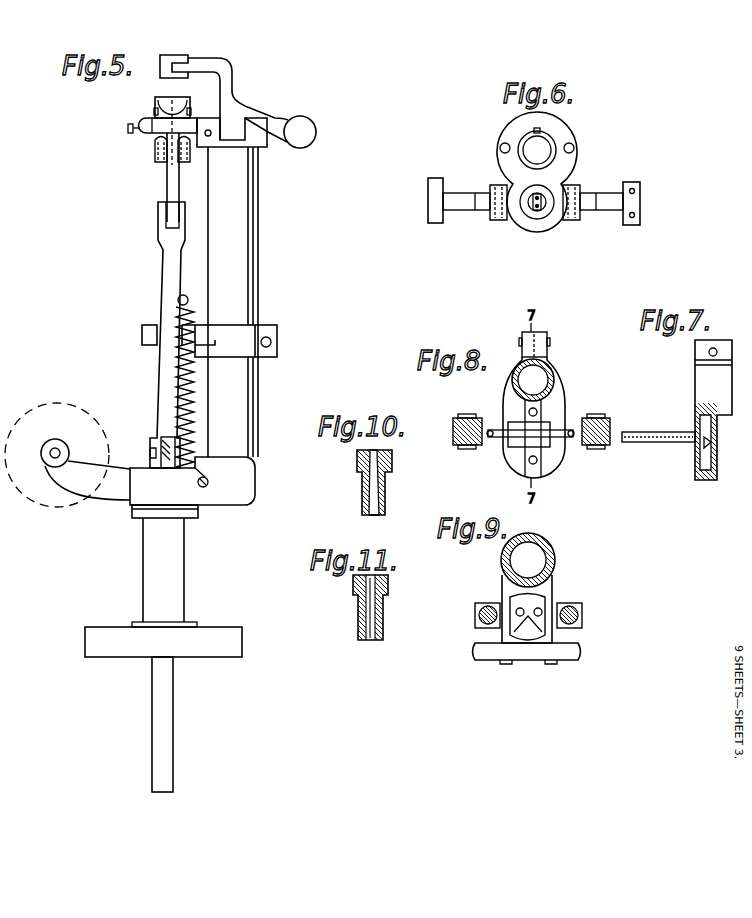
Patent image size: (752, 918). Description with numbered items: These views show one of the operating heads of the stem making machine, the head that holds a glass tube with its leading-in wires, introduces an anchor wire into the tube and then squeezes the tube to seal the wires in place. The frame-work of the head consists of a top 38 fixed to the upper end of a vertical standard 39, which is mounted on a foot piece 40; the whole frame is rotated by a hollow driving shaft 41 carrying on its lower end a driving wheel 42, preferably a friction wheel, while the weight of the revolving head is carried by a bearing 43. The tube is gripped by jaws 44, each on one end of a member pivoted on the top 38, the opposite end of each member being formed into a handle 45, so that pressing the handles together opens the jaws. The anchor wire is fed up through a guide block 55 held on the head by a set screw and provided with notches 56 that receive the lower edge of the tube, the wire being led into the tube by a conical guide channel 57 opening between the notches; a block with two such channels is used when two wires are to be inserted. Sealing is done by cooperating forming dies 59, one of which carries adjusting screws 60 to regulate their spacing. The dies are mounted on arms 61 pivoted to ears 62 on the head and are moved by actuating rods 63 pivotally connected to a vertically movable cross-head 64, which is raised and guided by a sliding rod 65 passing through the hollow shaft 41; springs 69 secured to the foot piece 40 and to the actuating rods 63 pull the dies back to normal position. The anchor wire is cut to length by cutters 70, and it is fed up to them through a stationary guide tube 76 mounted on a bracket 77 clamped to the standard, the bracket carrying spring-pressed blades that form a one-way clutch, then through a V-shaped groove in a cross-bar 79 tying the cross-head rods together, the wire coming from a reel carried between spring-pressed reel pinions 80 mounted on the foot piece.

In FIG. 5, the top 38 is at (265, 148).
In FIG. 5, the vertical standard 39 is at (233, 302).
In FIG. 8, the vertical standard 39 is at (553, 373).
In FIG. 9, the vertical standard 39 is at (553, 552).
In FIG. 5, the foot piece 40 is at (255, 492).
In FIG. 5, the hollow driving shaft 41 is at (185, 576).
In FIG. 5, the driving wheel 42 is at (243, 641).
In FIG. 5, the bearing 43 is at (200, 513).
In FIG. 5, the jaws 44 is at (176, 62).
In FIG. 5, the handle 45 is at (252, 103).
In FIG. 5, the guide block 55 is at (190, 110).
In FIG. 6, the guide block 55 is at (548, 198).
In FIG. 10, the guide block 55 is at (386, 494).
In FIG. 11, the guide block 55 is at (384, 614).
In FIG. 10, the notches 56 is at (385, 456).
In FIG. 10, the conical guide channel 57 is at (374, 514).
In FIG. 5, the forming dies 59 is at (152, 124).
In FIG. 6, the forming dies 59 is at (428, 201).
In FIG. 5, the adjusting screws 60 is at (156, 118).
In FIG. 6, the adjusting screws 60 is at (635, 215).
In FIG. 5, the arms 61 is at (167, 181).
In FIG. 6, the arms 61 is at (470, 212).
In FIG. 8, the arms 61 is at (453, 431).
In FIG. 6, the ears 62 is at (492, 190).
In FIG. 5, the actuating rods 63 is at (164, 275).
In FIG. 8, the actuating rods 63 is at (458, 448).
In FIG. 9, the actuating rods 63 is at (475, 617).
In FIG. 5, the cross-head 64 is at (166, 452).
In FIG. 9, the cross-head 64 is at (527, 648).
In FIG. 5, the sliding rod 65 is at (175, 693).
In FIG. 5, the springs 69 is at (197, 398).
In FIG. 8, the cutters 70 is at (530, 431).
In FIG. 7, the guide tube 76 is at (690, 436).
In FIG. 5, the bracket 77 is at (142, 339).
In FIG. 8, the bracket 77 is at (552, 409).
In FIG. 7, the bracket 77 is at (717, 472).
In FIG. 9, the cross-bar 79 is at (545, 608).
In FIG. 5, the reel pinions 80 is at (42, 455).